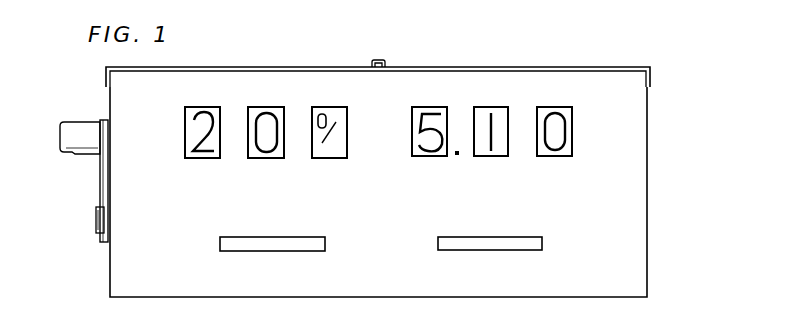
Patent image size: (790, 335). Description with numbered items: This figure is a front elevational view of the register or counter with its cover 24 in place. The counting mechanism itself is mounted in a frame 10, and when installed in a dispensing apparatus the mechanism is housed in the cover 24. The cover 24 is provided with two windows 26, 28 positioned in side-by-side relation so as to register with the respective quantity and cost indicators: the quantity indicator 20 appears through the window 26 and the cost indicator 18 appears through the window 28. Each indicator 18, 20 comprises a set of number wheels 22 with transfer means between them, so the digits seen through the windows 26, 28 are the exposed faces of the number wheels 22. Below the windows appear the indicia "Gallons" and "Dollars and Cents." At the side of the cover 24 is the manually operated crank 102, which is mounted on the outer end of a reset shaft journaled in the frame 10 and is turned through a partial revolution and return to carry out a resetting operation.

The frame 10 is at (641, 297).
The cost indicator 18 is at (500, 108).
The quantity indicator 20 is at (265, 105).
The number wheels 22 is at (248, 115).
The cover 24 is at (643, 153).
The window 26 is at (248, 155).
The window 28 is at (480, 157).
The manually operated crank 102 is at (100, 183).